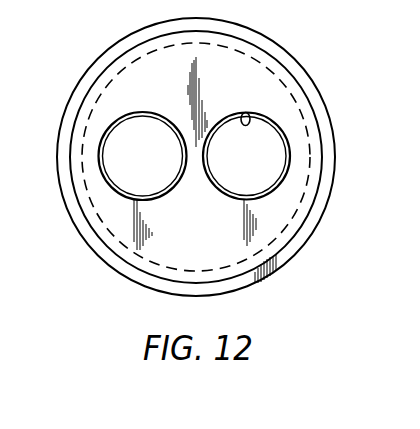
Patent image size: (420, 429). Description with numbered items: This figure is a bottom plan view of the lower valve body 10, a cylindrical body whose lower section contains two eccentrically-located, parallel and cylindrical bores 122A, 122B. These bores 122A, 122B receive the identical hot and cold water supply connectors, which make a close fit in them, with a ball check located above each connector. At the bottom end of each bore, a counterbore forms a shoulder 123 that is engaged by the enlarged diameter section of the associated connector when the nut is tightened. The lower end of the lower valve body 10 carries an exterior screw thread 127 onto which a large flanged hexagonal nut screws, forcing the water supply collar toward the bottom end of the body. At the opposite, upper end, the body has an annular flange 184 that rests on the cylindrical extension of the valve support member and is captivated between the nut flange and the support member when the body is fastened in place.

The lower valve body 10 is at (181, 157).
The annular flange 184 is at (94, 62).
The exterior screw thread 127 is at (268, 53).
The shoulder 123 is at (243, 117).
The bore 122A is at (167, 170).
The bore 122B is at (273, 170).